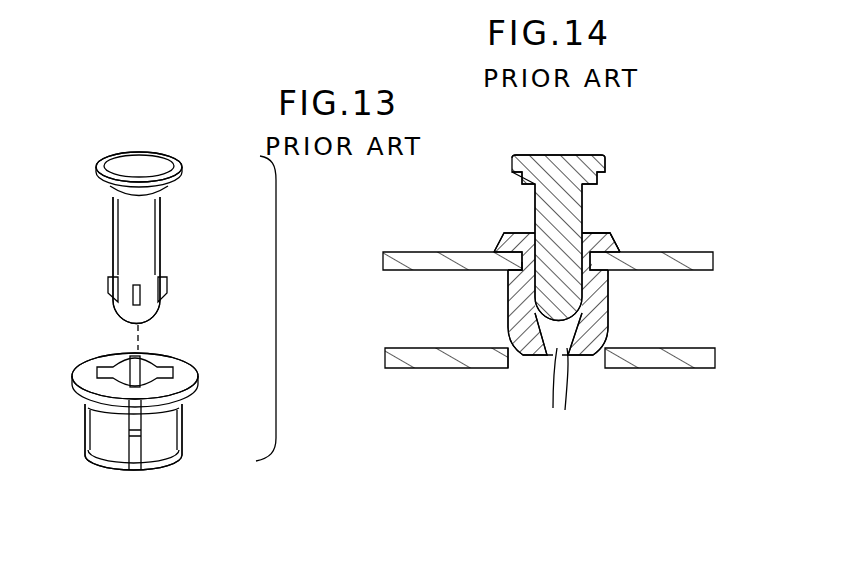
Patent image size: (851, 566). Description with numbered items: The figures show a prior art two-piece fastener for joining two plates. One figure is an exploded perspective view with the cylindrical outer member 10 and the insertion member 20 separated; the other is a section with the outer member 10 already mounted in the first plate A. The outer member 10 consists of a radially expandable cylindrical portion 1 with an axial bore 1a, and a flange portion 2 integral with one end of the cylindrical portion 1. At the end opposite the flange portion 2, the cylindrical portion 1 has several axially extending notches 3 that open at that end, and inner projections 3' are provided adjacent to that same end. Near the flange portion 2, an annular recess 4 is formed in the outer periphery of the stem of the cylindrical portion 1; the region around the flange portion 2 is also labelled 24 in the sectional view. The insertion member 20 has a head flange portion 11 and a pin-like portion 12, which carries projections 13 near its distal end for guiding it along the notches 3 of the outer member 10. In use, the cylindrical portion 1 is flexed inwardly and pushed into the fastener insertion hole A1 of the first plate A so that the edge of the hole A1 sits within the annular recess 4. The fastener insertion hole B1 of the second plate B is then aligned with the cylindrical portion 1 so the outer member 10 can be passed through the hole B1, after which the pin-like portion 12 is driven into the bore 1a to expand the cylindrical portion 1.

In FIG. 13, the insertion member 20 is at (202, 230).
In FIG. 14, the insertion member 20 is at (624, 132).
In FIG. 13, the flange portion 11 is at (100, 163).
In FIG. 14, the flange portion 11 is at (535, 158).
In FIG. 13, the pin-like portion 12 is at (113, 240).
In FIG. 14, the pin-like portion 12 is at (540, 210).
In FIG. 13, the projections 13 is at (162, 290).
In FIG. 13, the cylindrical outer member 10 is at (214, 409).
In FIG. 14, the cylindrical outer member 10 is at (622, 333).
In FIG. 13, the cylindrical portion 1 is at (90, 428).
In FIG. 14, the cylindrical portion 1 is at (598, 302).
In FIG. 13, the axial bore 1a is at (148, 368).
In FIG. 13, the flange portion 2 is at (185, 378).
In FIG. 14, the flange portion 2 is at (560, 245).
In FIG. 13, the notches 3 is at (142, 453).
In FIG. 14, the notches 3 is at (559, 393).
In FIG. 14, the inner projections 3' is at (563, 382).
In FIG. 14, the annular recess 4 is at (508, 242).
In FIG. 14, the flange portion 24 is at (600, 240).
In FIG. 14, the first plate A is at (425, 255).
In FIG. 14, the fastener insertion hole A1 is at (512, 278).
In FIG. 14, the second plate B is at (446, 365).
In FIG. 14, the fastener insertion hole B1 is at (512, 368).